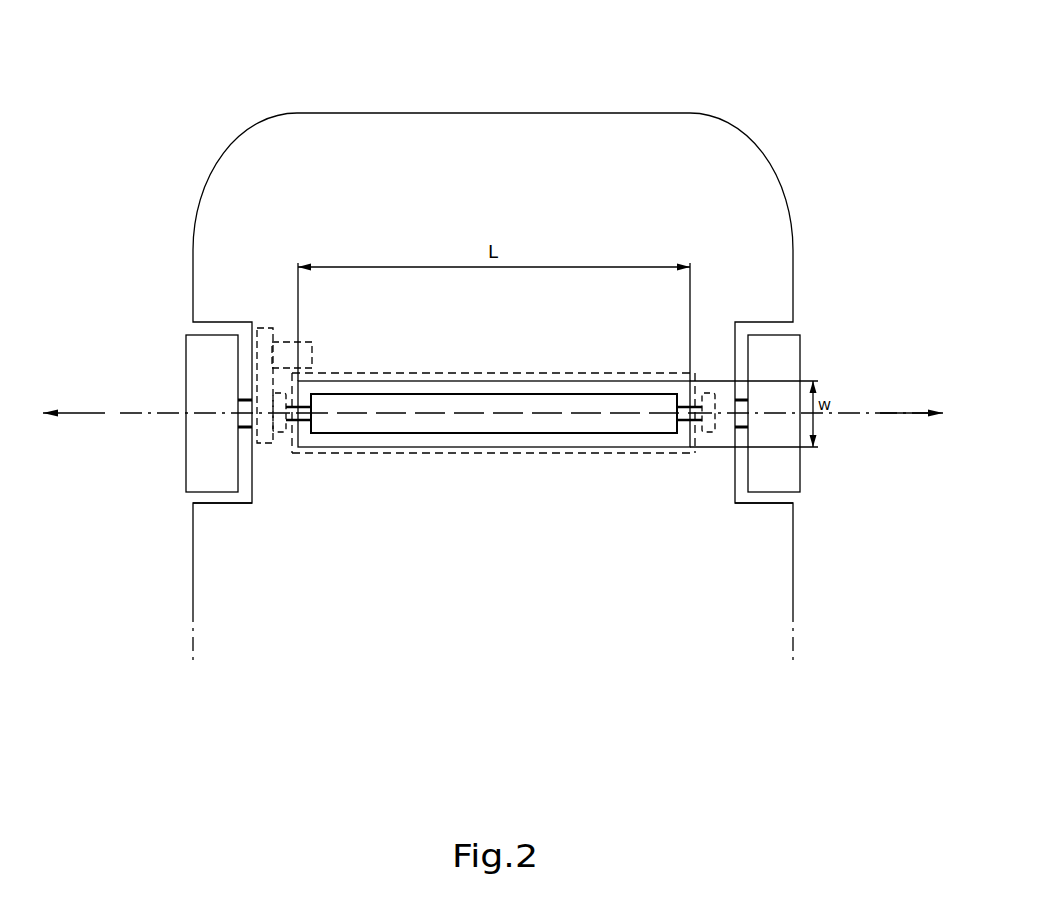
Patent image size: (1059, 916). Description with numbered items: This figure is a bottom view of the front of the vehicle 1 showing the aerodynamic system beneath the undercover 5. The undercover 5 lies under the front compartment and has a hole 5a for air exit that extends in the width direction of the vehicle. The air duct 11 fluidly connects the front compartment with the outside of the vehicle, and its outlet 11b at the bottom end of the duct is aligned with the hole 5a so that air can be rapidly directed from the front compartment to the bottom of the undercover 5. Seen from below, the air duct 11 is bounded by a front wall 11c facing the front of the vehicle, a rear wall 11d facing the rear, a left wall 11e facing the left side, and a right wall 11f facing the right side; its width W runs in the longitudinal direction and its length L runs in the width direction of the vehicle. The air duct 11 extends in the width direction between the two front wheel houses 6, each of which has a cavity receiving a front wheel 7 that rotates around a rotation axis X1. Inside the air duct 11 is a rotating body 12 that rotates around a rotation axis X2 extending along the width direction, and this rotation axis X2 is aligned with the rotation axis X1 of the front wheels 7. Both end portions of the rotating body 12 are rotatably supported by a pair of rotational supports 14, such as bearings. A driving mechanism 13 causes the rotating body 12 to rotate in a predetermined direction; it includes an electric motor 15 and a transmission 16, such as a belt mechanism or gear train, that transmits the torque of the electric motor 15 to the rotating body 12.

The vehicle 1 is at (650, 85).
The undercover 5 is at (493, 137).
The hole 5a is at (494, 382).
The front wheel house 6 is at (222, 504).
The front wheel 7 is at (200, 446).
The air duct 11 is at (442, 457).
The outlet 11b is at (381, 389).
The front wall 11c is at (490, 373).
The rear wall 11d is at (492, 454).
The left wall 11e is at (701, 450).
The right wall 11f is at (291, 385).
The rotating body 12 is at (610, 394).
The driving mechanism 13 is at (279, 331).
The rotational support 14 is at (276, 444).
The electric motor 15 is at (303, 340).
The transmission 16 is at (258, 437).
The rotation axis X1 is at (137, 414).
The rotation axis X2 is at (367, 416).